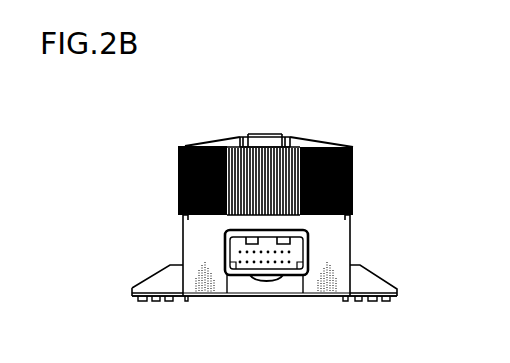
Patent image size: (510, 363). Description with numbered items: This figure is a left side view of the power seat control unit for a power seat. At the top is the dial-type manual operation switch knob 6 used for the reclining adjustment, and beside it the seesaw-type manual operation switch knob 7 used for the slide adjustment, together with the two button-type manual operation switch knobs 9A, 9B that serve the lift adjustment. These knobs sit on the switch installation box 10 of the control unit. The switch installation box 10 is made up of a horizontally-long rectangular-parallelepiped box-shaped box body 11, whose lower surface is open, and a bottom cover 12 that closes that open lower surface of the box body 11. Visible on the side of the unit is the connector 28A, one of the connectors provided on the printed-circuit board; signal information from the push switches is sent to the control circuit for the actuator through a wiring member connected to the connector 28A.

The dial-type manual operation switch knob 6 is at (353, 153).
The seesaw-type manual operation switch knob 7 is at (264, 134).
The button-type manual operation switch knob 9A is at (226, 142).
The button-type manual operation switch knob 9B is at (302, 139).
The switch installation box 10 is at (352, 242).
The box body 11 is at (182, 243).
The bottom cover 12 is at (249, 300).
The connector 28A is at (284, 274).